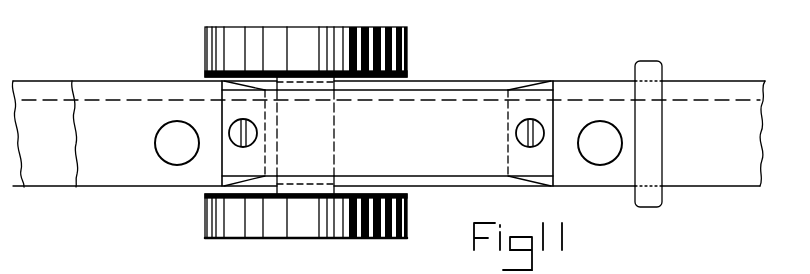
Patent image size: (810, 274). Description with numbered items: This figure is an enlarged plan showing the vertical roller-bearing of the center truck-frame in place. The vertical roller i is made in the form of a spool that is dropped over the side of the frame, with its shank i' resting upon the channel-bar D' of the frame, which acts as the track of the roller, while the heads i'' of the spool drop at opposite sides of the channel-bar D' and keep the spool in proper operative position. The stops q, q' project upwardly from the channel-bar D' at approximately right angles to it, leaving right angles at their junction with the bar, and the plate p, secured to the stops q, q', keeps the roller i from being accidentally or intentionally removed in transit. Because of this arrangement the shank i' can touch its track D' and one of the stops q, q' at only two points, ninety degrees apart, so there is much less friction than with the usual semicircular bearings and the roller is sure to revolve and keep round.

The channel-bar D' is at (388, 134).
The stop q' is at (156, 143).
The stop q is at (607, 148).
The plate p is at (387, 133).
The vertical roller i is at (313, 132).
The shank i' is at (320, 135).
The heads i'' is at (307, 132).